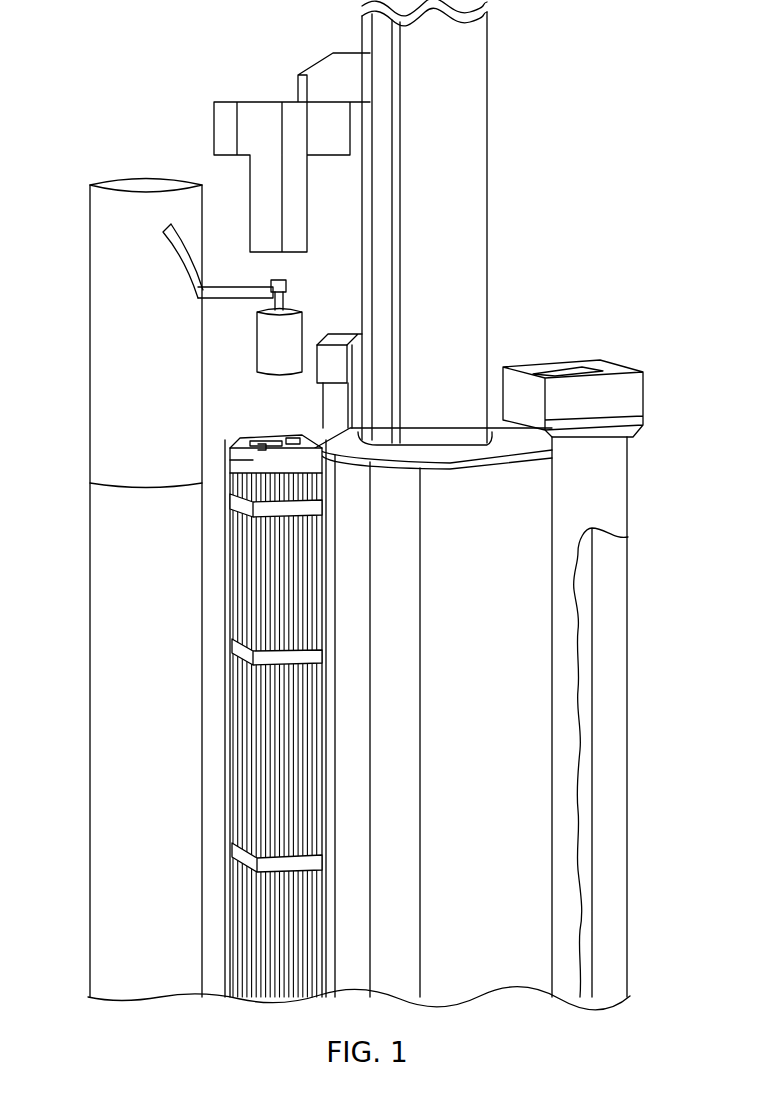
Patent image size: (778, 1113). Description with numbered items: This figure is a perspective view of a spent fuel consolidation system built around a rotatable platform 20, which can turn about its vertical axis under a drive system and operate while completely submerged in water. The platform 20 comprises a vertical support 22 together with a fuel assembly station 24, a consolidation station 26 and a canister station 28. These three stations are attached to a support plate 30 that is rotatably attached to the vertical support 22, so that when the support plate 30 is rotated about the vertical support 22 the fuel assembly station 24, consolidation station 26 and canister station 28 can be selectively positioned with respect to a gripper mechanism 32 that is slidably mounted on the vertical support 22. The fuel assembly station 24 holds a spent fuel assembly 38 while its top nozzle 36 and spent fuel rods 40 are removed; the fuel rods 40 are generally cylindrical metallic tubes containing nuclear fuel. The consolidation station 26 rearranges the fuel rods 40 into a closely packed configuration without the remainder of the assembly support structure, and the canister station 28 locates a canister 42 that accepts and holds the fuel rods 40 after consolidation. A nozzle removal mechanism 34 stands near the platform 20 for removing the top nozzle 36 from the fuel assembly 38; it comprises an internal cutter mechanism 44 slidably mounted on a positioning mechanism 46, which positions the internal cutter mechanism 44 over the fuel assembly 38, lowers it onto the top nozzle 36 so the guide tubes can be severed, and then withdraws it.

The rotatable platform 20 is at (475, 221).
The vertical support 22 is at (426, 256).
The fuel assembly station 24 is at (217, 698).
The consolidation station 26 is at (320, 337).
The canister station 28 is at (655, 402).
The support plate 30 is at (500, 450).
The gripper mechanism 32 is at (222, 127).
The nozzle removal mechanism 34 is at (112, 588).
The top nozzle 36 is at (225, 455).
The fuel assembly 38 is at (297, 722).
The fuel rods 40 is at (295, 613).
The canister 42 is at (323, 365).
The internal cutter mechanism 44 is at (270, 350).
The positioning mechanism 46 is at (129, 423).